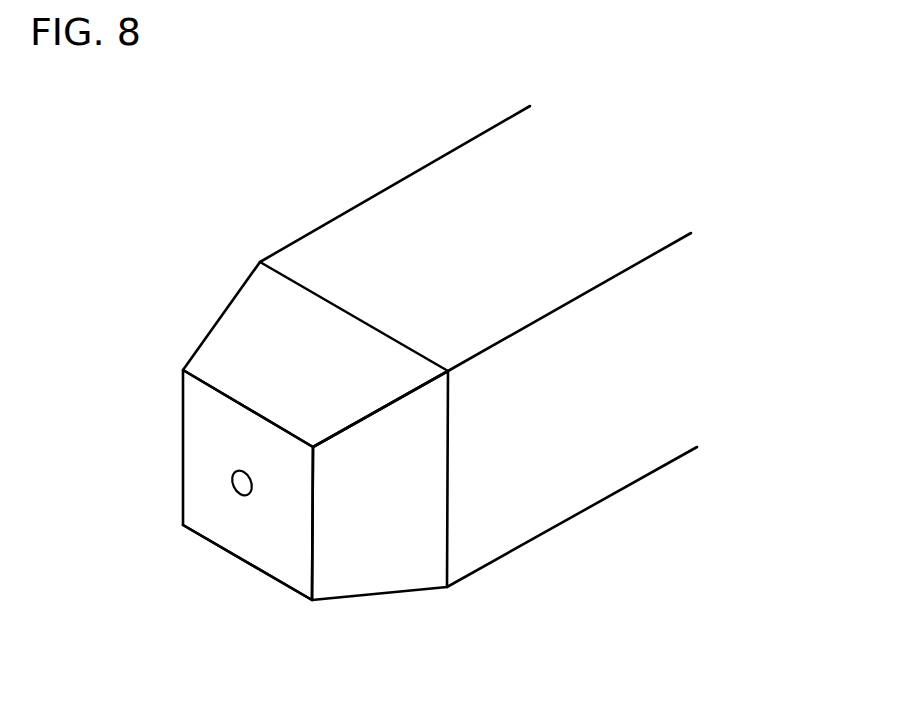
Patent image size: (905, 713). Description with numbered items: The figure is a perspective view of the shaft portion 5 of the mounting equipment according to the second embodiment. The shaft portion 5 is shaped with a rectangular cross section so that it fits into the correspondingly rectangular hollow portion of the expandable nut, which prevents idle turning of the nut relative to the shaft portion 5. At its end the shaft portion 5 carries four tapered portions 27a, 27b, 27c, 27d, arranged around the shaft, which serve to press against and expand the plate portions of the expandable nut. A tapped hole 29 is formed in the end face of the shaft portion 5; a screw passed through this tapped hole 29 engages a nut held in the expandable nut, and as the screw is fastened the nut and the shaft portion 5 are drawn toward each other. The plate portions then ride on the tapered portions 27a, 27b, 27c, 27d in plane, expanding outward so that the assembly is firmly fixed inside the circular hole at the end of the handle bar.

The shaft portion 5 is at (385, 388).
The tapered portion 27a is at (255, 307).
The tapered portion 27b is at (165, 448).
The tapered portion 27c is at (272, 593).
The tapered portion 27d is at (390, 537).
The tapped hole 29 is at (243, 491).